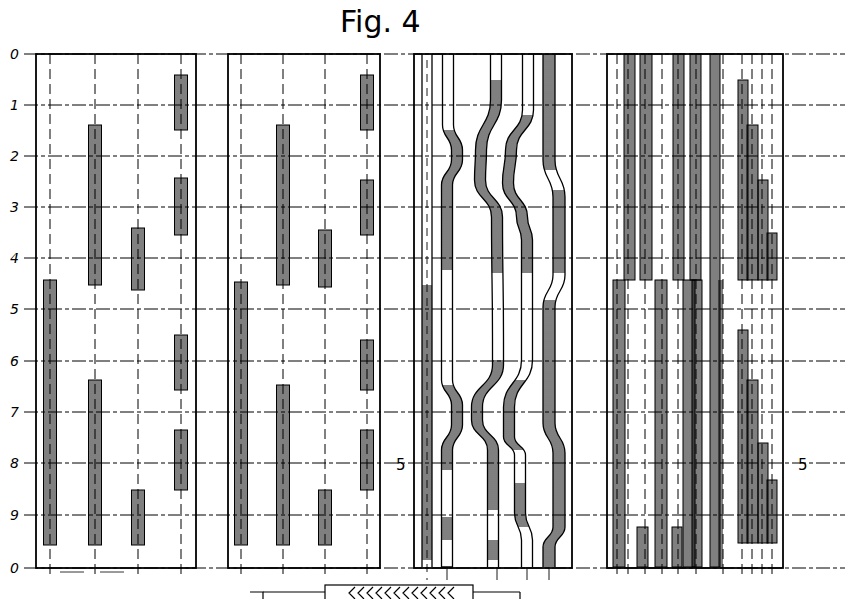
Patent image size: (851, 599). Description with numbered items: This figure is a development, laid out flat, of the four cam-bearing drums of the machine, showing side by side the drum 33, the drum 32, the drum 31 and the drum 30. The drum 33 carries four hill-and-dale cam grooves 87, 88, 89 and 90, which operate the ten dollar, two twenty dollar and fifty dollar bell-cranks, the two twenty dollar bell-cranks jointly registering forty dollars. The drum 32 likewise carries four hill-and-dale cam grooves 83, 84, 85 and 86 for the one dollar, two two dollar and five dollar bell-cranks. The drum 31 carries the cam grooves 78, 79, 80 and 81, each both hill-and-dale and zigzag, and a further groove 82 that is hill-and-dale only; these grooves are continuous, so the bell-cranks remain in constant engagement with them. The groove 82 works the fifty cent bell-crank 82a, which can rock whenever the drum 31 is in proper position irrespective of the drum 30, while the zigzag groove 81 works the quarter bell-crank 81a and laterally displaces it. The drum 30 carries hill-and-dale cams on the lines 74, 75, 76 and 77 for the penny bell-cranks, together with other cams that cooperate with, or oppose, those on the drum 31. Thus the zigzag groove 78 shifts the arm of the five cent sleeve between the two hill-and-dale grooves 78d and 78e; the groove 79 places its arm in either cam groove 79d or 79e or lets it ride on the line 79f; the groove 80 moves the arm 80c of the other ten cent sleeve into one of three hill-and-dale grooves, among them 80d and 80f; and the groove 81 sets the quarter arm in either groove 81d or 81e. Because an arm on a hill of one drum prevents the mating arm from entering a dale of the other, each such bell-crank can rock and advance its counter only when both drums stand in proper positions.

The drum 30 is at (703, 50).
The drum 31 is at (470, 63).
The drum 32 is at (302, 58).
The drum 33 is at (108, 62).
The cam line 74 is at (770, 567).
The cam line 75 is at (762, 54).
The cam line 76 is at (745, 567).
The cam line 77 is at (742, 80).
The cam groove 78 is at (555, 306).
The cam groove 79 is at (528, 75).
The cam groove 80 is at (496, 80).
The cam groove 81 is at (448, 80).
The cam groove 82 is at (428, 306).
The cam groove 83 is at (368, 307).
The cam groove 84 is at (326, 301).
The cam groove 85 is at (283, 301).
The cam groove 86 is at (242, 301).
The cam groove 87 is at (182, 302).
The cam groove 88 is at (138, 302).
The cam groove 89 is at (95, 302).
The cam groove 90 is at (50, 302).
The bell-crank 82a is at (72, 570).
The bell-crank 81a is at (112, 570).
The cam groove 78d is at (620, 54).
The cam groove 79d is at (645, 54).
The cam groove 79e is at (666, 80).
The arm 80c is at (690, 54).
The cam groove 81d is at (715, 54).
The cam groove 78e is at (619, 567).
The line 79f is at (655, 567).
The cam groove 80d is at (677, 567).
The cam groove 80f is at (697, 567).
The cam groove 81e is at (723, 567).